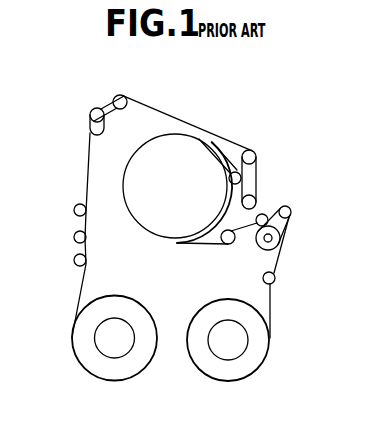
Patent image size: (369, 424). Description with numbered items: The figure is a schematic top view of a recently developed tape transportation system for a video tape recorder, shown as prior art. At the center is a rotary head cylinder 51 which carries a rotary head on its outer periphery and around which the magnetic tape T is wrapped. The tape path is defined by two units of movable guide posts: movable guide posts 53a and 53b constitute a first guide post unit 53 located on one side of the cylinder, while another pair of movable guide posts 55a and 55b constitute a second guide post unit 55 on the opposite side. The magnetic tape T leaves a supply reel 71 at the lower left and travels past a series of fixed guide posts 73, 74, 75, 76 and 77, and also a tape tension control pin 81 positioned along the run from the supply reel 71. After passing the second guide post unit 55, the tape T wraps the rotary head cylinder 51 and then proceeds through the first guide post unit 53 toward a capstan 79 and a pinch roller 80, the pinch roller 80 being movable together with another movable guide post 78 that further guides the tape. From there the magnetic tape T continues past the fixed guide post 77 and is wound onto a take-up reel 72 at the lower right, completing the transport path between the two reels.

The magnetic tape T is at (88, 152).
The rotary head cylinder 51 is at (183, 145).
The first guide post unit 53 is at (273, 135).
The movable guide post 53a is at (259, 199).
The movable guide post 53b is at (251, 150).
The second guide post unit 55 is at (107, 84).
The movable guide post 55a is at (122, 96).
The movable guide post 55b is at (96, 108).
The supply reel 71 is at (77, 342).
The take-up reel 72 is at (260, 353).
The fixed guide post 73 is at (75, 263).
The fixed guide post 74 is at (72, 209).
The fixed guide post 75 is at (258, 165).
The fixed guide post 76 is at (226, 245).
The fixed guide post 77 is at (274, 284).
The movable guide post 78 is at (291, 211).
The capstan 79 is at (282, 234).
The pinch roller 80 is at (280, 246).
The tape tension control pin 81 is at (73, 238).